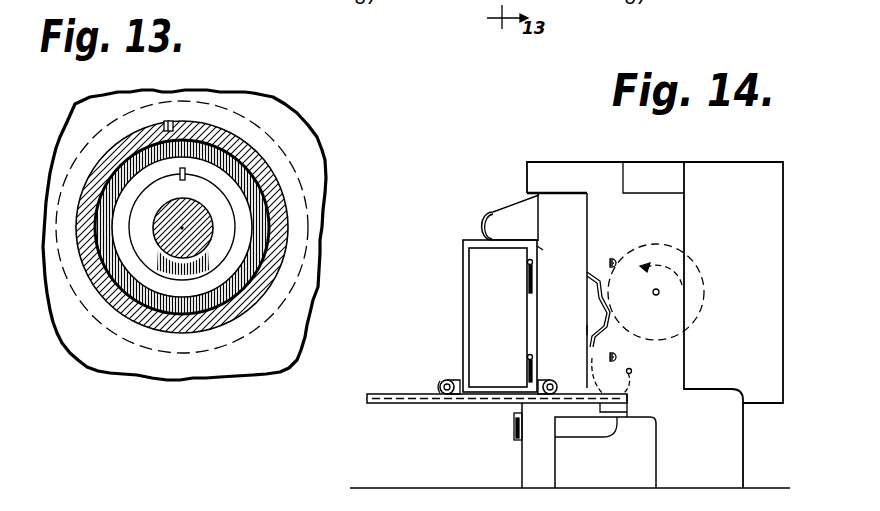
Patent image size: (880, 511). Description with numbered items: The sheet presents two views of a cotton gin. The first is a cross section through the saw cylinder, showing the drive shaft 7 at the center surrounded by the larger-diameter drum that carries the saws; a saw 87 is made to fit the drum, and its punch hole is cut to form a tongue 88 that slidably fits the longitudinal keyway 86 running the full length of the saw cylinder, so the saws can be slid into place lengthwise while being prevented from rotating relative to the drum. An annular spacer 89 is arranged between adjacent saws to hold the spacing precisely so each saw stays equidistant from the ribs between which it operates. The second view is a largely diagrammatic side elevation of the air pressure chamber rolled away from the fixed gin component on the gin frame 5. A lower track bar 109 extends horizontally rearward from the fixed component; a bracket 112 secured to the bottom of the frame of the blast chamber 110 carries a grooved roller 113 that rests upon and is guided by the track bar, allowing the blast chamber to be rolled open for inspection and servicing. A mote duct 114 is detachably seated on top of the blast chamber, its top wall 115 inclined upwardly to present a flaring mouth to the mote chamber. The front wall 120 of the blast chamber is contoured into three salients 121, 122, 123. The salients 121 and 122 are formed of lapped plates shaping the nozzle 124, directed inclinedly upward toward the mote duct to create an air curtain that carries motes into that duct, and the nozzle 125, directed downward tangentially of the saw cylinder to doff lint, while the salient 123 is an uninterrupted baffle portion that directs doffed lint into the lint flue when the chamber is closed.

In FIG. 14, the gin frame 5 is at (533, 463).
In FIG. 13, the drive shaft 7 is at (178, 203).
In FIG. 13, the keyway 86 is at (172, 124).
In FIG. 13, the saw 87 is at (66, 121).
In FIG. 13, the tongue 88 is at (165, 124).
In FIG. 13, the annular spacer 89 is at (262, 130).
In FIG. 14, the lower track bar 109 is at (427, 400).
In FIG. 14, the blast chamber 110 is at (477, 264).
In FIG. 14, the bracket 112 is at (450, 377).
In FIG. 14, the grooved roller 113 is at (441, 379).
In FIG. 14, the mote duct 114 is at (496, 219).
In FIG. 14, the top wall 115 is at (522, 202).
In FIG. 14, the front wall 120 is at (539, 330).
In FIG. 14, the salient 121 is at (543, 266).
In FIG. 14, the salient 122 is at (541, 308).
In FIG. 14, the salient 123 is at (537, 354).
In FIG. 14, the nozzle 124 is at (537, 248).
In FIG. 14, the nozzle 125 is at (548, 286).